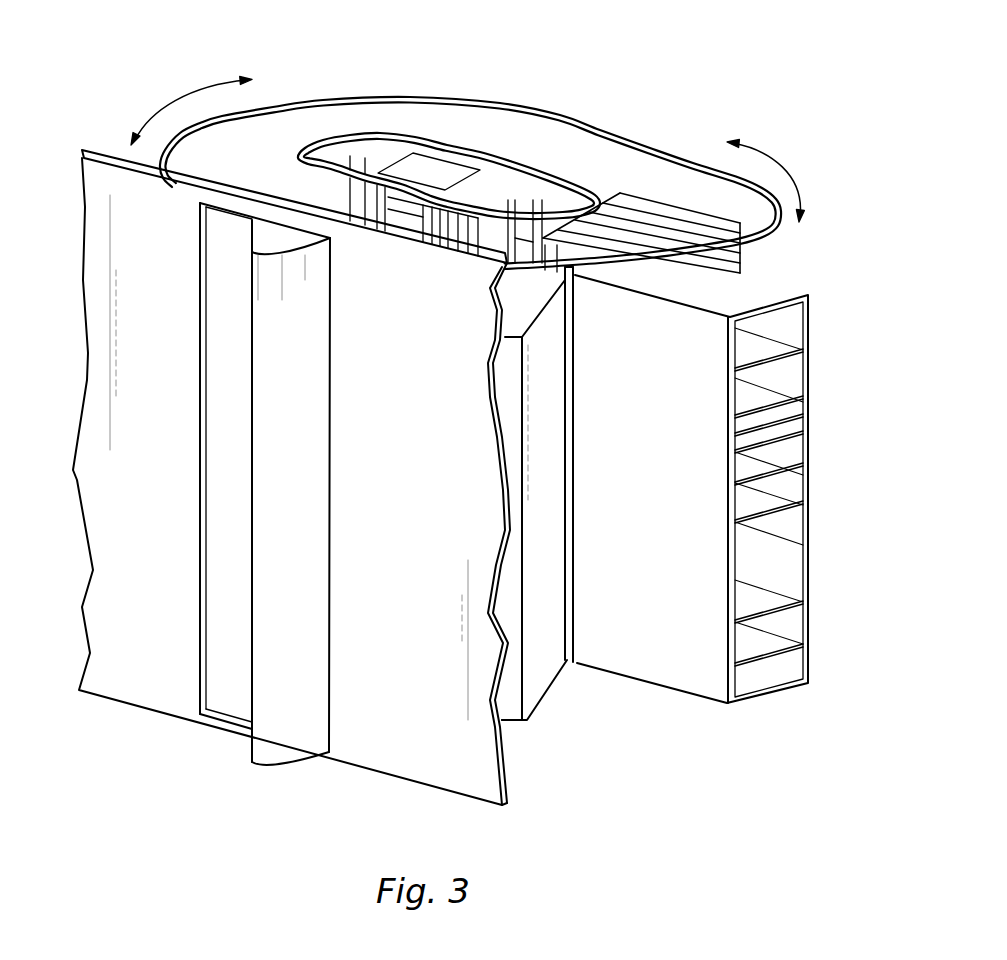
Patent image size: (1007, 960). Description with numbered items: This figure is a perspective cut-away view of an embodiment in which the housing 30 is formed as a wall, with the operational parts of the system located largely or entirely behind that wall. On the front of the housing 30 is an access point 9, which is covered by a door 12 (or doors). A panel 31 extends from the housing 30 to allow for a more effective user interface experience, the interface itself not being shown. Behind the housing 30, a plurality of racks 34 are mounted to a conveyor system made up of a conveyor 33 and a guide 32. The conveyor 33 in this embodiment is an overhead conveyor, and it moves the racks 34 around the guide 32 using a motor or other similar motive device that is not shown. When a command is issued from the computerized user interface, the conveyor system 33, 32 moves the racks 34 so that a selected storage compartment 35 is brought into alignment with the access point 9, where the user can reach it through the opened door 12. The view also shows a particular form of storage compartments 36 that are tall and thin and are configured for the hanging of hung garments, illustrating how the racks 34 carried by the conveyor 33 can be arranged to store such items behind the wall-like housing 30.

The access point 9 is at (185, 725).
The door 12 is at (223, 663).
The housing 30 is at (103, 678).
The panel 31 is at (283, 747).
The guide 32 is at (413, 137).
The conveyor 33 is at (327, 97).
The rack 34 is at (657, 647).
The storage compartment 35 is at (780, 633).
The storage compartment 36 is at (645, 220).